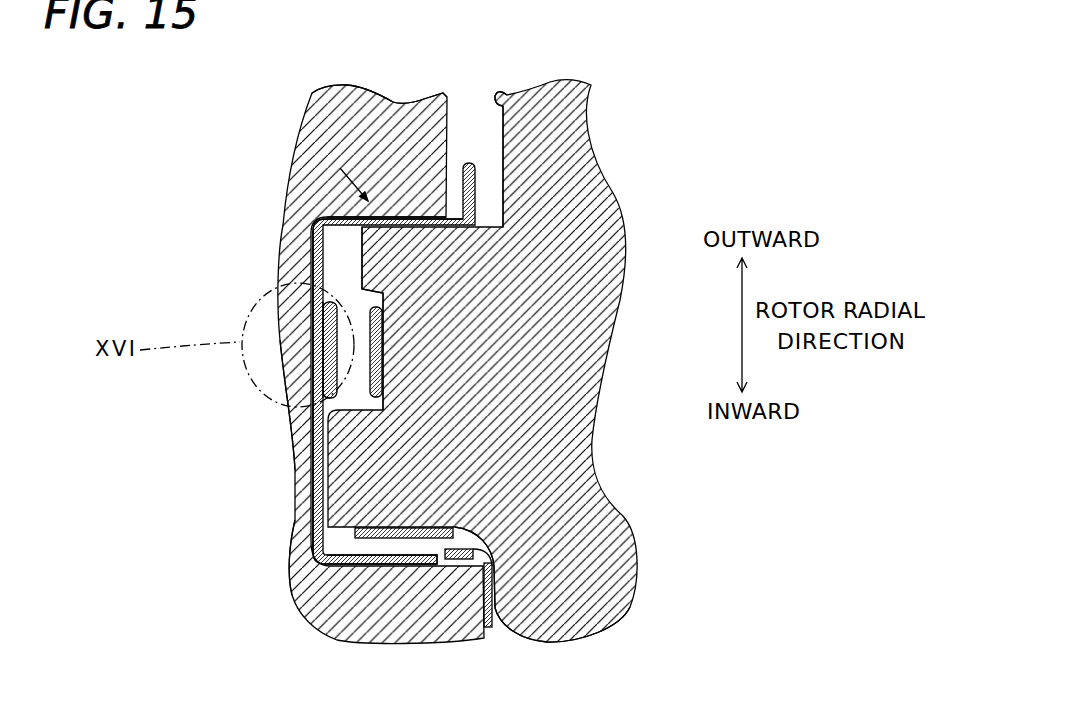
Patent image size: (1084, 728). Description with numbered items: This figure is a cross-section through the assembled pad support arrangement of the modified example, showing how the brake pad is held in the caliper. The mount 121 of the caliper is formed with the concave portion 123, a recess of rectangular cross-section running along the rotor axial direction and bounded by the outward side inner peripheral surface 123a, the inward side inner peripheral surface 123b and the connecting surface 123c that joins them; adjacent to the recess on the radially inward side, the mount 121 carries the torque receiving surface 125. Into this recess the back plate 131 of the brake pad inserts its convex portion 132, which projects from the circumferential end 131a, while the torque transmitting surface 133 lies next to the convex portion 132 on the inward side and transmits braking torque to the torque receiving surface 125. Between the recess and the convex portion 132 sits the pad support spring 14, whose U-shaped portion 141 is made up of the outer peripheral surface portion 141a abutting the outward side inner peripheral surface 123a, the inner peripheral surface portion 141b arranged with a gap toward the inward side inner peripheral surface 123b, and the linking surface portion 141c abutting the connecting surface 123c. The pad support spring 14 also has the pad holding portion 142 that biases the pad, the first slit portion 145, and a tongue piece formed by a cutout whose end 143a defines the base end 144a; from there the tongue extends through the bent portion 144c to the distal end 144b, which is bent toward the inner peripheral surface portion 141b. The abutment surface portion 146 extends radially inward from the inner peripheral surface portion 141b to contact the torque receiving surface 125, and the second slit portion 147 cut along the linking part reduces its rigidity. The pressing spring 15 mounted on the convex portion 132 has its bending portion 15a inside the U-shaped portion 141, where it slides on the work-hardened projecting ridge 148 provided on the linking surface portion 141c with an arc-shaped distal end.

The pad support spring 14 is at (306, 500).
The pressing spring 15 is at (356, 300).
The bending portion 15a is at (338, 338).
The mount 121 is at (360, 90).
The concave portion 123 is at (302, 126).
The outward side inner peripheral surface 123a is at (343, 212).
The inward side inner peripheral surface 123b is at (313, 568).
The connecting surface 123c is at (297, 481).
The torque receiving surface 125 is at (493, 618).
The back plate 131 is at (563, 80).
The circumferential end 131a is at (517, 76).
The convex portion 132 is at (483, 225).
The torque transmitting surface 133 is at (495, 580).
The U-shaped portion 141 is at (280, 332).
The outer peripheral surface portion 141a is at (318, 255).
The inner peripheral surface portion 141b is at (313, 553).
The linking surface portion 141c is at (313, 289).
The pad holding portion 142 is at (313, 530).
The end of the cutout portion 143a is at (313, 404).
The base end 144a is at (323, 402).
The distal end 144b is at (415, 566).
The bent portion 144c is at (345, 536).
The first slit portion 145 is at (317, 220).
The abutment surface portion 146 is at (480, 564).
The second slit portion 147 is at (480, 548).
The projecting ridge 148 is at (322, 347).